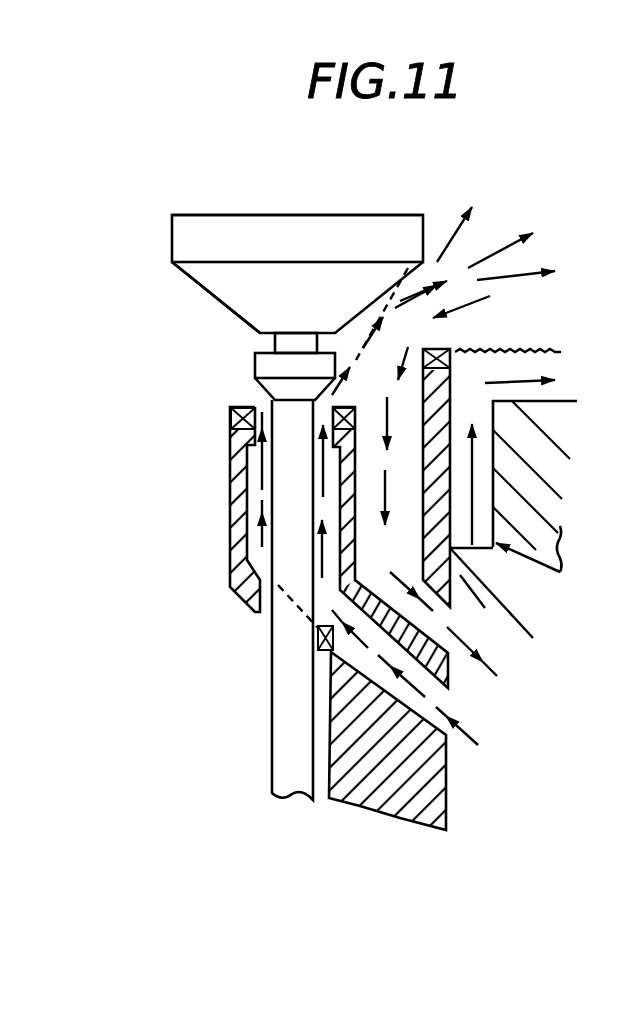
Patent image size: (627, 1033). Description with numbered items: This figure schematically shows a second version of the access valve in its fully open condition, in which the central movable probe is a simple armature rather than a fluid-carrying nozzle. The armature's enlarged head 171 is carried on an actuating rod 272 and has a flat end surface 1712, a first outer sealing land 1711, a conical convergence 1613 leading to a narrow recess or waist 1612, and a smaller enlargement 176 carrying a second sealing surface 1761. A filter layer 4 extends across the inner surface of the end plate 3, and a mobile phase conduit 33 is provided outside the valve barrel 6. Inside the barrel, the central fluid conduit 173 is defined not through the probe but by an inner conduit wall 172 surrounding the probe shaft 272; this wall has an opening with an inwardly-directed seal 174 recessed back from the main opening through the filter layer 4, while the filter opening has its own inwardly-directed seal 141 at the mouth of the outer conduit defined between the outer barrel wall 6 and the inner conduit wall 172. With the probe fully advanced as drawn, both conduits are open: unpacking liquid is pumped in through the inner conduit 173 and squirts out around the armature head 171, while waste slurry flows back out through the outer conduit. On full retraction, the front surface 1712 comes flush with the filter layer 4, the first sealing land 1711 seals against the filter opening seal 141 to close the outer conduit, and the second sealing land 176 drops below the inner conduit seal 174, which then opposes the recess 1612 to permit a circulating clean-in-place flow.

The first outer sealing land 1711 is at (172, 232).
The flat end surface 1712 is at (316, 215).
The enlarged head 171 is at (203, 238).
The conical convergence 1613 is at (224, 304).
The narrow recess or waist 1612 is at (266, 346).
The second sealing surface 1761 is at (268, 369).
The smaller enlargement 176 is at (252, 378).
The inwardly-directed seal 174 is at (232, 416).
The central fluid conduit 173 is at (232, 503).
The inner conduit wall 172 is at (232, 545).
The actuating rod 272 is at (283, 670).
The inwardly-directed seal 141 is at (424, 352).
The filter layer 4 is at (529, 350).
The end plate 3 is at (540, 394).
The mobile phase conduit 33 is at (483, 477).
The valve barrel 6 is at (443, 646).